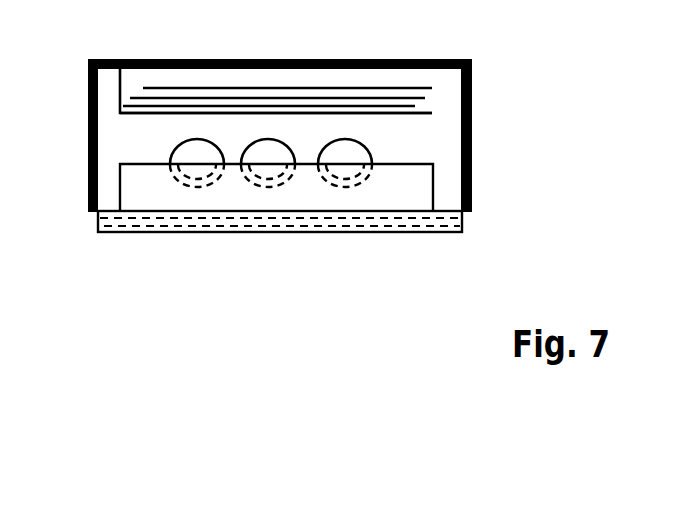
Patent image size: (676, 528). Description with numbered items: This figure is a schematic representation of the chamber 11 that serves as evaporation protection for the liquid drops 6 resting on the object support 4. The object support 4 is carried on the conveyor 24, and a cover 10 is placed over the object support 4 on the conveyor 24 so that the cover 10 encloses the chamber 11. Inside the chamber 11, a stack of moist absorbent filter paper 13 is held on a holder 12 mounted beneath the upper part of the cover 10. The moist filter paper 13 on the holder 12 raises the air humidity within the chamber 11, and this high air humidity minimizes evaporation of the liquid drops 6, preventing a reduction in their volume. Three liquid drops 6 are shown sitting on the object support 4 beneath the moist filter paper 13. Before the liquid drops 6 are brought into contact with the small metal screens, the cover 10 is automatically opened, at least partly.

The cover 10 is at (158, 59).
The chamber 11 is at (108, 131).
The holder 12 is at (432, 113).
The moist filter paper 13 is at (298, 92).
The object support 4 is at (390, 194).
The liquid drops 6 is at (347, 153).
The conveyor 24 is at (160, 225).